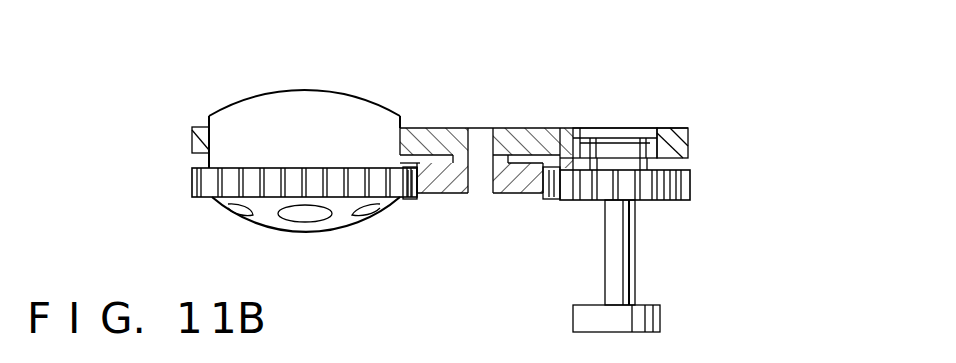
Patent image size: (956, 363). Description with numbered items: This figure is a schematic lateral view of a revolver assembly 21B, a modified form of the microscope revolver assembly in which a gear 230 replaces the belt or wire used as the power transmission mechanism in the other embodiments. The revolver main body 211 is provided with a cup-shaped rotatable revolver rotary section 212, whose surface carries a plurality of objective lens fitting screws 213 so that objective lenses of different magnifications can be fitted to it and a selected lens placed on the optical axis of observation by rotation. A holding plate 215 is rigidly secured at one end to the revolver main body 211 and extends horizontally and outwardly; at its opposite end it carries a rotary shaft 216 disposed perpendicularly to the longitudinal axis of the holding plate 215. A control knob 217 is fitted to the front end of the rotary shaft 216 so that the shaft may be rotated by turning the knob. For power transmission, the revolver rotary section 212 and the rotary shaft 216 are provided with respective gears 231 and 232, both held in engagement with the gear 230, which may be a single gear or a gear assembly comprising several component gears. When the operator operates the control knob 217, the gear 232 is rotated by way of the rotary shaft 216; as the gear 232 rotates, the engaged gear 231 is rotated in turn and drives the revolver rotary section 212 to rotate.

The revolver assembly 21B is at (329, 71).
The revolver main body 211 is at (357, 117).
The revolver rotary section 212 is at (267, 213).
The objective lens fitting screws 213 is at (318, 223).
The holding plate 215 is at (668, 142).
The rotary shaft 216 is at (627, 258).
The control knob 217 is at (660, 318).
The gear 230 is at (520, 190).
The gear 231 is at (193, 180).
The gear 232 is at (690, 185).